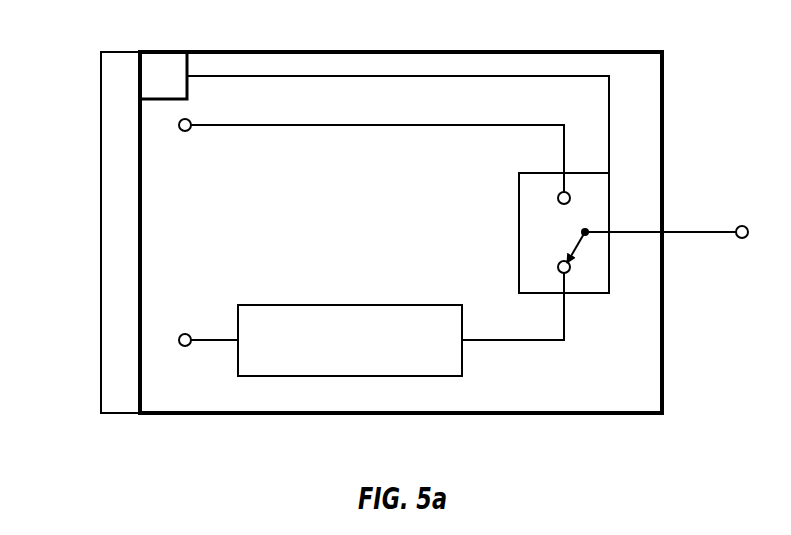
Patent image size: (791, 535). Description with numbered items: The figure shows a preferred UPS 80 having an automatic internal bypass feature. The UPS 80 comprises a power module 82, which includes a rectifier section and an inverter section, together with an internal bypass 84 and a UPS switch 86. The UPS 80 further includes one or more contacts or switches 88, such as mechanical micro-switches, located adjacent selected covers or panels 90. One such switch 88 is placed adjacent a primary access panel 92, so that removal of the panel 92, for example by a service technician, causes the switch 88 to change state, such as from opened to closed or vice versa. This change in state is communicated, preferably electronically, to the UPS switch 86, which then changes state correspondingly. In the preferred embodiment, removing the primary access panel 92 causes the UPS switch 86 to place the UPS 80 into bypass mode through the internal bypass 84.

The UPS 80 is at (644, 48).
The power module 82 is at (260, 303).
The internal bypass 84 is at (531, 123).
The UPS switch 86 is at (519, 233).
The switch 88 is at (163, 78).
The cover or panel 90 is at (118, 79).
The primary access panel 92 is at (118, 256).